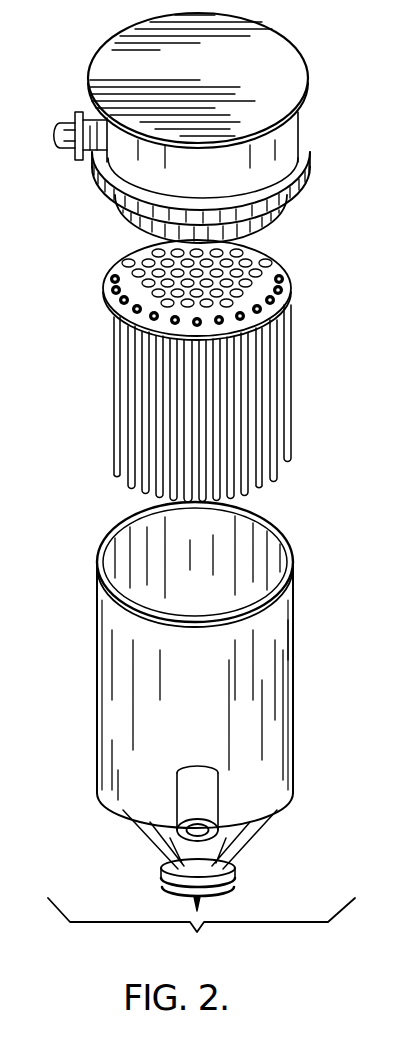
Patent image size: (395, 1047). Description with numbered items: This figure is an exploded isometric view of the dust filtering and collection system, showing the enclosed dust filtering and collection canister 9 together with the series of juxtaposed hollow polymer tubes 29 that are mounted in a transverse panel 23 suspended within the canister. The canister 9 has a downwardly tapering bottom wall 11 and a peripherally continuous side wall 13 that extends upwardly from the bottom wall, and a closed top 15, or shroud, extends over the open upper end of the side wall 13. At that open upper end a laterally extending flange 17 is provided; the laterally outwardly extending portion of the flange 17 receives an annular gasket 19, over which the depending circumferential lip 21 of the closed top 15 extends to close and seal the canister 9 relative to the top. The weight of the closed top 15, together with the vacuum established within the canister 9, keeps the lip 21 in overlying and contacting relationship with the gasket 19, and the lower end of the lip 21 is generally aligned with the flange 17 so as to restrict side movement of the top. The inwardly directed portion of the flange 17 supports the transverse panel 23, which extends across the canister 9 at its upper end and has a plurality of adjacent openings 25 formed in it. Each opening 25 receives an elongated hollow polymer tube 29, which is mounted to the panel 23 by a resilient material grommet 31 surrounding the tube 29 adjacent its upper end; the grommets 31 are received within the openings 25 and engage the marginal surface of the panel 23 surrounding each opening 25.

The dust filtering and collection canister 9 is at (197, 717).
The bottom wall 11 is at (263, 823).
The side wall 13 is at (245, 646).
The closed top 15 is at (264, 52).
The laterally extending flange 17 is at (288, 574).
The annular gasket 19 is at (100, 189).
The depending circumferential lip 21 is at (308, 150).
The transverse panel 23 is at (279, 273).
The openings 25 is at (120, 257).
The hollow polymer tube 29 is at (120, 347).
The grommet 31 is at (112, 280).